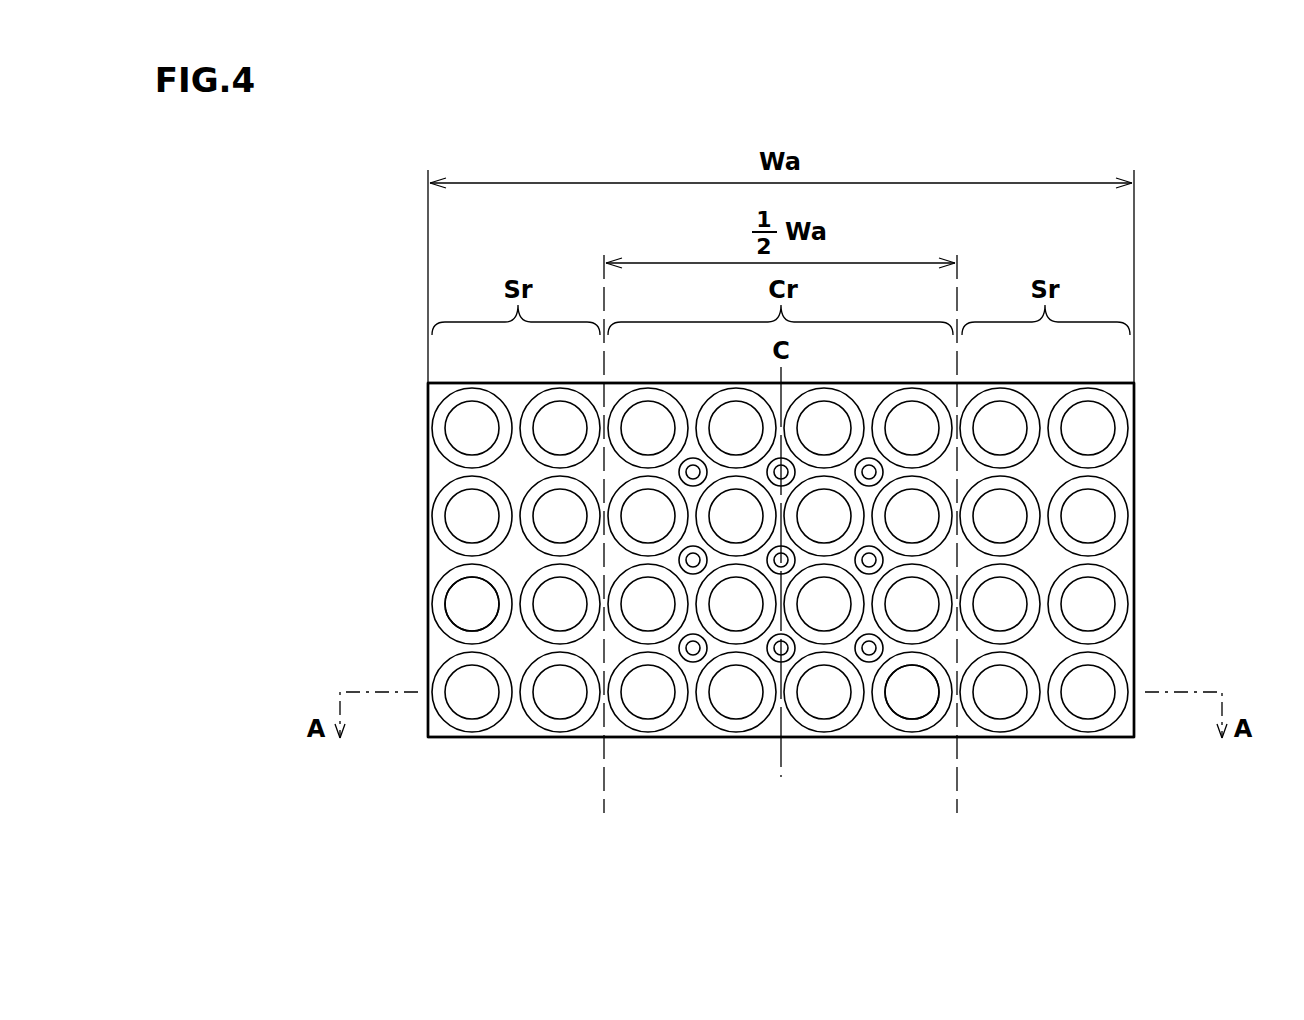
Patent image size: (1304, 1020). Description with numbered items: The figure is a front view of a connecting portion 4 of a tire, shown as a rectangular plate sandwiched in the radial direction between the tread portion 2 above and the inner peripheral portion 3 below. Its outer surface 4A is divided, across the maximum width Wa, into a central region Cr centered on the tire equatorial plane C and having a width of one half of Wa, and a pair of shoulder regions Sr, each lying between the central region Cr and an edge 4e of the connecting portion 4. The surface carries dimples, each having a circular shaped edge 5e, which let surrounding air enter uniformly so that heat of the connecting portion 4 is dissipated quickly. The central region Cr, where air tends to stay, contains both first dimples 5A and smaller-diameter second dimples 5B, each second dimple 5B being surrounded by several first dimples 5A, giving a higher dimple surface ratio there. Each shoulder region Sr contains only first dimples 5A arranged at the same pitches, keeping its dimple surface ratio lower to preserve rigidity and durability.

The tread portion 2 is at (1040, 367).
The inner peripheral portion 3 is at (1040, 773).
The connecting portion 4 is at (1163, 392).
The outer surface 4A is at (1123, 563).
The edge 4e is at (427, 471).
The first dimple 5A is at (449, 732).
The second dimple 5B is at (863, 653).
The circular shaped edge 5e is at (484, 570).